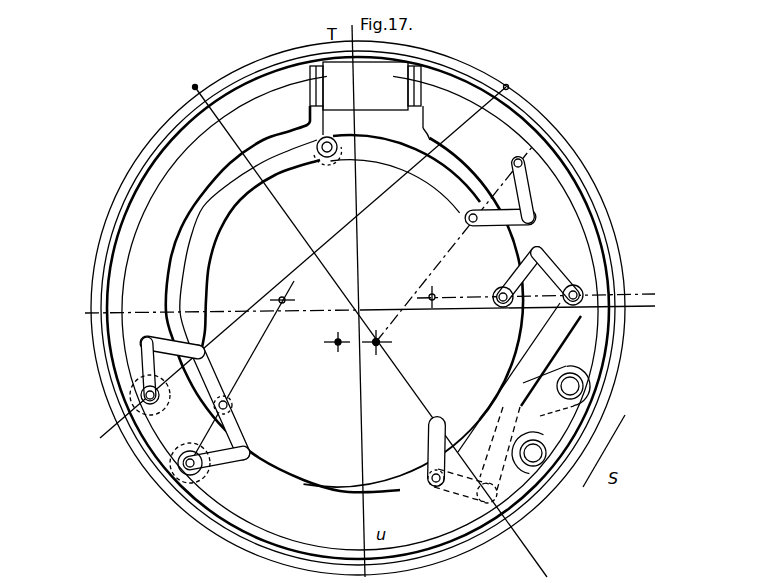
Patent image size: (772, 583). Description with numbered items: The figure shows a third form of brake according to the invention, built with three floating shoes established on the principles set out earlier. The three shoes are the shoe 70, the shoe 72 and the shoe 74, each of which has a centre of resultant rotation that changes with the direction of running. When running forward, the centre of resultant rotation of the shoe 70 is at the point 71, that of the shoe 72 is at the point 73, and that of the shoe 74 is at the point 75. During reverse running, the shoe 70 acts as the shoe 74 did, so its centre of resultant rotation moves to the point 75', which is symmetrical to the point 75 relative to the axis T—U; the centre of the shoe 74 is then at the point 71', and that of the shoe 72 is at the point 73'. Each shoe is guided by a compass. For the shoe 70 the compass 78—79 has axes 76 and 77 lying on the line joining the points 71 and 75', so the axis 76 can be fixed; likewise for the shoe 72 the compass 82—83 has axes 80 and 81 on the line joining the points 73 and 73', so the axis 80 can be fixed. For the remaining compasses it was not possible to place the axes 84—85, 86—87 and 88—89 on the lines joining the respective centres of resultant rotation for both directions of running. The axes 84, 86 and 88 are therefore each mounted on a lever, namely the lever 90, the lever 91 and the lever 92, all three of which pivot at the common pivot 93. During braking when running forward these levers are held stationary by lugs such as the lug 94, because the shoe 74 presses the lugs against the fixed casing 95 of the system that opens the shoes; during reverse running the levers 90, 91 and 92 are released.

The shoe 70 is at (492, 115).
The centre of resultant rotation of shoe 70 71 is at (447, 251).
The centre of resultant rotation of shoe 74 in reverse 71' is at (332, 355).
The shoe 72 is at (230, 494).
The centre of resultant rotation of shoe 72 73 is at (244, 372).
The centre of resultant rotation of shoe 72 in reverse 73' is at (442, 288).
The shoe 74 is at (132, 247).
The centre of resultant rotation of shoe 74 75 is at (306, 245).
The centre of resultant rotation of shoe 70 in reverse 75' is at (366, 317).
The axis of compass 78—79 76 is at (439, 419).
The axis of compass 78—79 77 is at (512, 515).
The compass arm 78 is at (427, 452).
The compass arm 79 is at (454, 498).
The axis of compass 82—83 80 is at (504, 302).
The axis of compass 82—83 81 is at (585, 292).
The compass arm 82 is at (513, 281).
The compass arm 83 is at (563, 268).
The compass axis 84 is at (230, 405).
The compass axis 85 is at (184, 467).
The compass axis 86 is at (207, 335).
The compass axis 87 is at (142, 402).
The compass axis 88 is at (468, 220).
The compass axis 89 is at (523, 160).
The lever 90 is at (212, 372).
The lever 91 is at (196, 271).
The lever 92 is at (384, 152).
The pivot 93 is at (327, 157).
The lug 94 is at (316, 63).
The fixed casing 95 is at (386, 104).